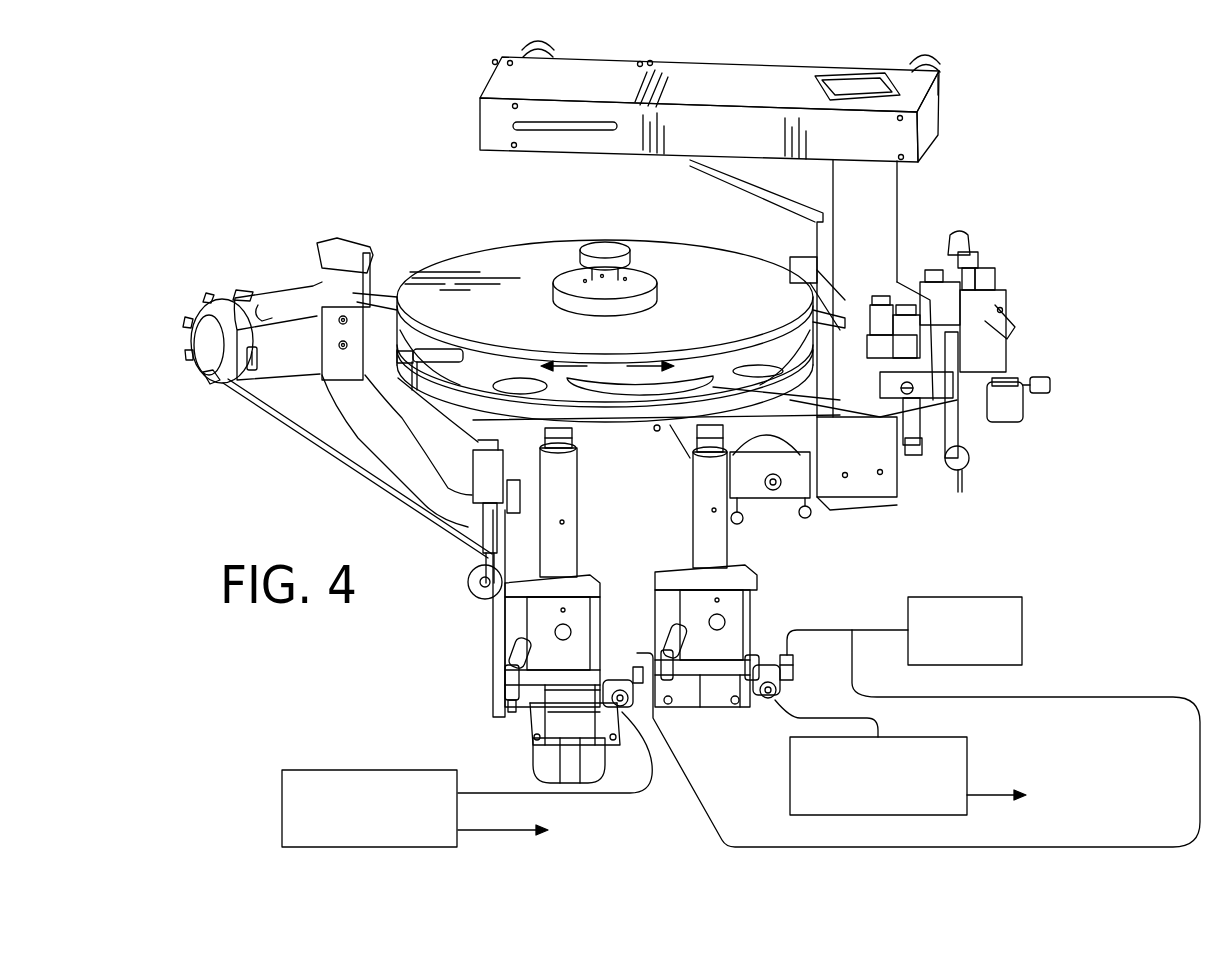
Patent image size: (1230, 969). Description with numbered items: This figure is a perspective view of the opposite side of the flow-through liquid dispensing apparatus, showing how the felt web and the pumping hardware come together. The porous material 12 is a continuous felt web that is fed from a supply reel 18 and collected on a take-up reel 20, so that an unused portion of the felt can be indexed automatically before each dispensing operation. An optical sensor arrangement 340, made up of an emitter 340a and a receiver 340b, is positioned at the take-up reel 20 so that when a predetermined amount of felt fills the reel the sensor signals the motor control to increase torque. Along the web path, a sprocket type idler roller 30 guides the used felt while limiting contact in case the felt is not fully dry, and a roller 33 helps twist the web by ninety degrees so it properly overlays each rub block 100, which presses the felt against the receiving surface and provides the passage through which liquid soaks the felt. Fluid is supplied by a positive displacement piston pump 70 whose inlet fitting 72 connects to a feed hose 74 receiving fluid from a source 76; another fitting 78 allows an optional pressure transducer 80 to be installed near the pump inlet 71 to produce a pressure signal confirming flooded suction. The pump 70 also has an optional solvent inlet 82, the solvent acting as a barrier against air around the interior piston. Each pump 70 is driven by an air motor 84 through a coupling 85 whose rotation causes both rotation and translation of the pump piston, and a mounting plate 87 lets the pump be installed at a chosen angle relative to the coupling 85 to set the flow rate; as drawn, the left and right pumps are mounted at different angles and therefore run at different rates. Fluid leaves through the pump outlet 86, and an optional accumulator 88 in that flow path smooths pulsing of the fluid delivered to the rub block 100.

The porous material 12 is at (338, 472).
The supply reel 18 is at (442, 415).
The take-up reel 20 is at (563, 250).
The sprocket type idler roller 30 is at (217, 355).
The roller 33 is at (370, 272).
The positive displacement piston pump 70 is at (557, 702).
The pump inlet 71 is at (747, 673).
The inlet fitting 72 is at (818, 668).
The feed hose 74 is at (840, 628).
The source 76 is at (1007, 597).
The fitting 78 is at (780, 692).
The pressure transducer 80 is at (342, 768).
The solvent inlet 82 is at (605, 695).
The air motor 84 is at (560, 483).
The coupling 85 is at (540, 620).
The outlet 86 is at (517, 647).
The mounting plate 87 is at (530, 717).
The accumulator 88 is at (513, 667).
The rub block 100 is at (550, 758).
The optical sensor arrangement 340 is at (607, 366).
The emitter 340a is at (437, 353).
The receiver 340b is at (813, 298).